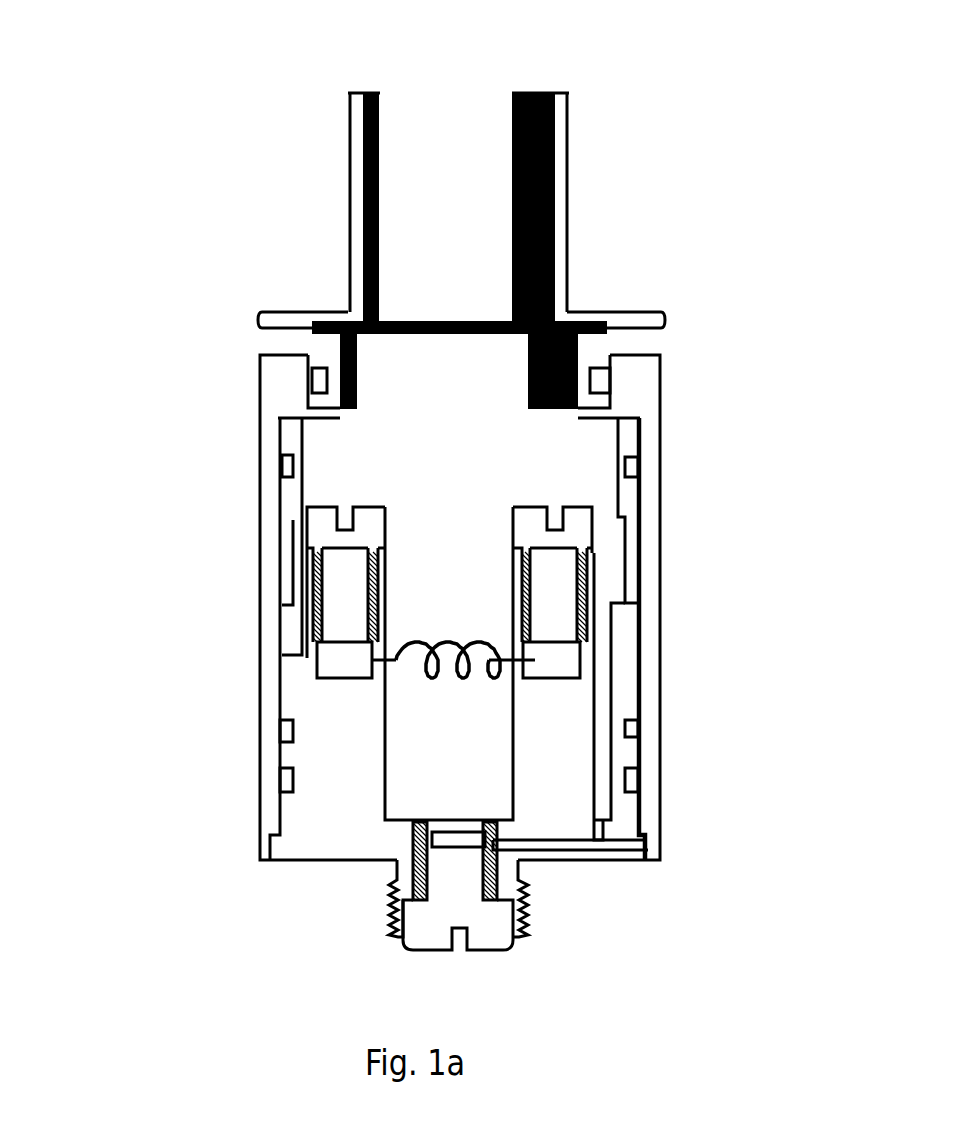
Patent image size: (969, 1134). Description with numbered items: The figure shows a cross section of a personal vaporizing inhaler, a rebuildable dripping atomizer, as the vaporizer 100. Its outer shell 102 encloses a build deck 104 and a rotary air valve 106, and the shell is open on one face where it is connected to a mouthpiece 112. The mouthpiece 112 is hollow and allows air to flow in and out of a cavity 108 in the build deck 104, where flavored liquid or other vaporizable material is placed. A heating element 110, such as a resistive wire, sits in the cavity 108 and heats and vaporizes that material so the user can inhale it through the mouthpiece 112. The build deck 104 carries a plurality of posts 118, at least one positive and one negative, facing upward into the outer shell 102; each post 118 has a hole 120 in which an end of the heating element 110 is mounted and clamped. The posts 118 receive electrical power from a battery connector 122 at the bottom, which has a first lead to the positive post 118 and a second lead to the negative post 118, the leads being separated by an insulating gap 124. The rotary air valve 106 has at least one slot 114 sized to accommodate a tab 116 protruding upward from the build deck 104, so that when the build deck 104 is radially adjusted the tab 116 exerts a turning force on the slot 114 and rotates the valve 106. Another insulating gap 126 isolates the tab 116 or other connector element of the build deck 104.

The vaporizer 100 is at (424, 498).
The outer shell 102 is at (254, 614).
The build deck 104 is at (294, 822).
The rotary air valve 106 is at (641, 500).
The cavity 108 is at (397, 722).
The heating element 110 is at (429, 635).
The mouthpiece 112 is at (345, 124).
The slot 114 is at (632, 593).
The tab 116 is at (625, 622).
The post 118 is at (315, 523).
The hole 120 is at (335, 667).
The battery connector 122 is at (478, 943).
The insulating gap 124 is at (413, 848).
The insulating gap 126 is at (582, 852).